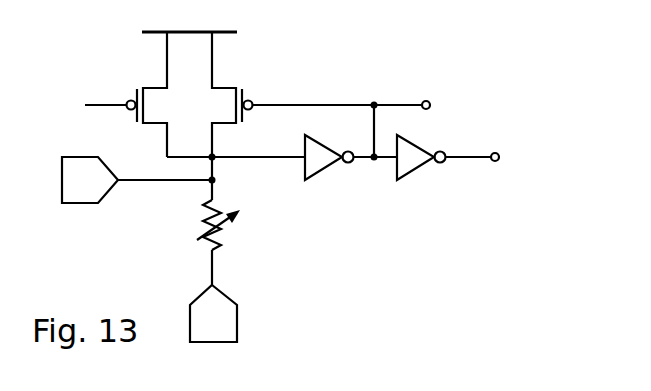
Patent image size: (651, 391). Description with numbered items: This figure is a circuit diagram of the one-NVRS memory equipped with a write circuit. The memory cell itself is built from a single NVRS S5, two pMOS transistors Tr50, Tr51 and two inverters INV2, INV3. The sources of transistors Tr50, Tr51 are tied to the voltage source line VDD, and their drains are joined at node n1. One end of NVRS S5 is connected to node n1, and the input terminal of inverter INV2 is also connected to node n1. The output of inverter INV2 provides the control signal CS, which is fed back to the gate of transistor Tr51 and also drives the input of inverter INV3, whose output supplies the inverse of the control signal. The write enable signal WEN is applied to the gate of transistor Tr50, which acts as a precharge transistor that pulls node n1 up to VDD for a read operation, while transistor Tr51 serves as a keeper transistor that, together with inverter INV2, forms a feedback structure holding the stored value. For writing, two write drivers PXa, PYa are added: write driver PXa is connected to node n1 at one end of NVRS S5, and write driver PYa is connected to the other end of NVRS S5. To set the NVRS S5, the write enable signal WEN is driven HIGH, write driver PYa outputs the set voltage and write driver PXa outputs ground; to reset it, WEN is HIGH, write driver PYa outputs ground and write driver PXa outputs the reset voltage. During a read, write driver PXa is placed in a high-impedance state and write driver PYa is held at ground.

The voltage source line VDD is at (220, 32).
The pMOS transistor Tr50 is at (127, 94).
The pMOS transistor Tr51 is at (245, 94).
The write enable signal WEN is at (76, 110).
The node n1 is at (236, 163).
The write driver PXa is at (137, 180).
The NVRS S5 is at (196, 226).
The write driver PYa is at (213, 297).
The inverter INV2 is at (342, 176).
The inverter INV3 is at (441, 176).
The control signal CS is at (360, 122).